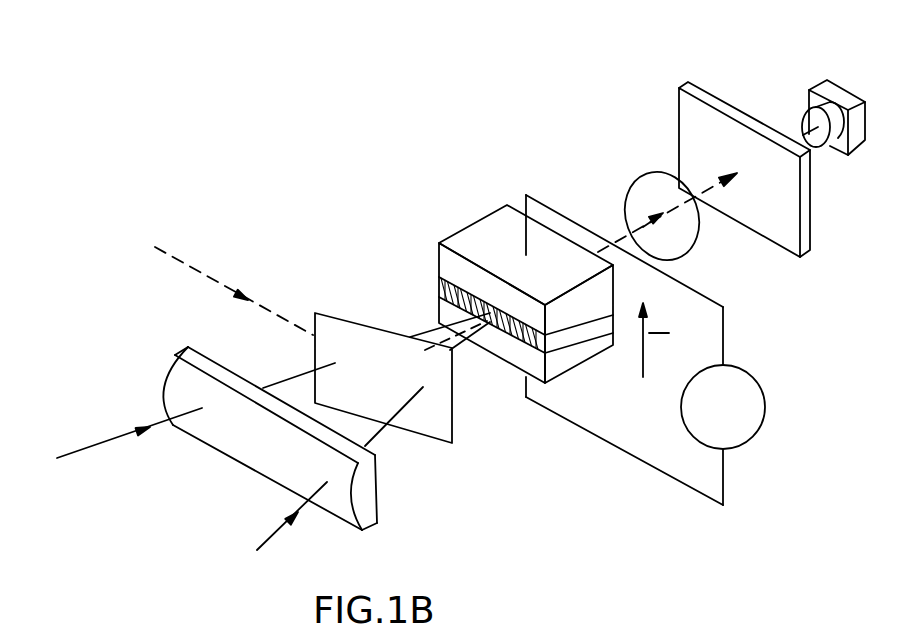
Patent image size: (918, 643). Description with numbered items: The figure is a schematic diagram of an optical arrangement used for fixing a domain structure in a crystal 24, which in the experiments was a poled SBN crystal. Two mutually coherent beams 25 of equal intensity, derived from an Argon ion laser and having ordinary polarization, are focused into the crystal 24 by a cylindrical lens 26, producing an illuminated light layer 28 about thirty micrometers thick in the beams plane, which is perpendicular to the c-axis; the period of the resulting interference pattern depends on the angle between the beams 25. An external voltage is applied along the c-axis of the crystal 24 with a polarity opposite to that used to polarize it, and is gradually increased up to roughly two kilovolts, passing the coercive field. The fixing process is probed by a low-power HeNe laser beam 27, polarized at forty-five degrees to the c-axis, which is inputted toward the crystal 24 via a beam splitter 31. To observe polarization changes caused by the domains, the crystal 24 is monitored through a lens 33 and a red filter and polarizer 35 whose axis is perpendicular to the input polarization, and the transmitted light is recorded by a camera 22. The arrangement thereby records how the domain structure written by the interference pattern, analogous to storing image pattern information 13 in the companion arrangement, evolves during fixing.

The image pattern information 13 is at (455, 278).
The camera 22 is at (825, 79).
The crystal 24 is at (468, 228).
The mutually coherent beams 25 is at (262, 542).
The cylindrical lens 26 is at (378, 503).
The HeNe laser beam 27 is at (192, 268).
The illuminated light layer 28 is at (438, 282).
The beam splitter 31 is at (338, 317).
The lens 33 is at (643, 174).
The polarizer 35 is at (680, 110).